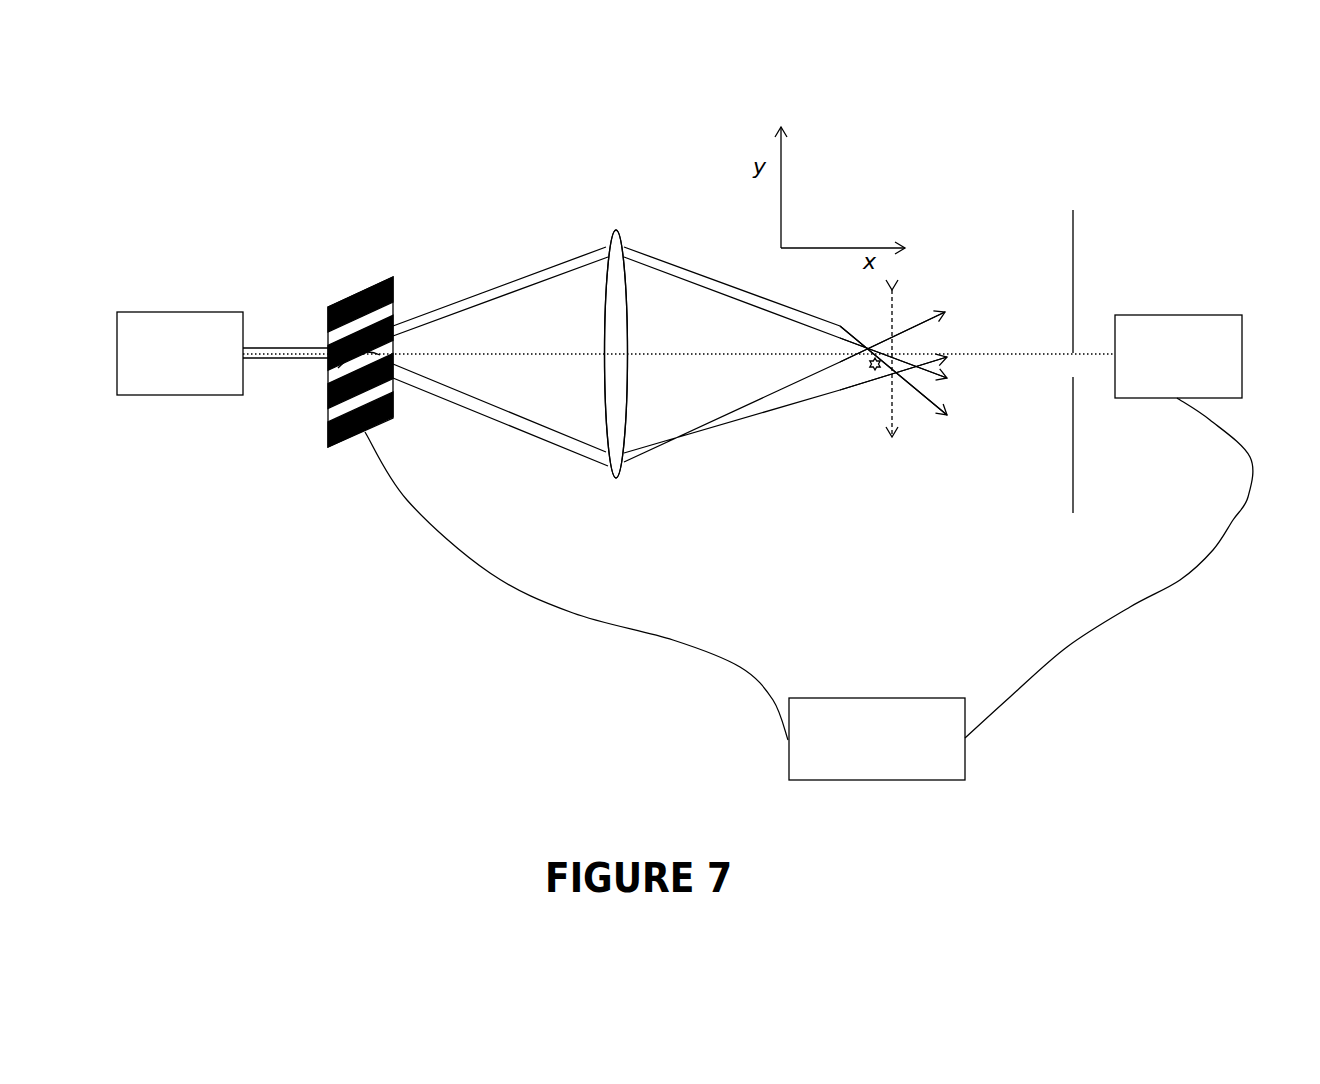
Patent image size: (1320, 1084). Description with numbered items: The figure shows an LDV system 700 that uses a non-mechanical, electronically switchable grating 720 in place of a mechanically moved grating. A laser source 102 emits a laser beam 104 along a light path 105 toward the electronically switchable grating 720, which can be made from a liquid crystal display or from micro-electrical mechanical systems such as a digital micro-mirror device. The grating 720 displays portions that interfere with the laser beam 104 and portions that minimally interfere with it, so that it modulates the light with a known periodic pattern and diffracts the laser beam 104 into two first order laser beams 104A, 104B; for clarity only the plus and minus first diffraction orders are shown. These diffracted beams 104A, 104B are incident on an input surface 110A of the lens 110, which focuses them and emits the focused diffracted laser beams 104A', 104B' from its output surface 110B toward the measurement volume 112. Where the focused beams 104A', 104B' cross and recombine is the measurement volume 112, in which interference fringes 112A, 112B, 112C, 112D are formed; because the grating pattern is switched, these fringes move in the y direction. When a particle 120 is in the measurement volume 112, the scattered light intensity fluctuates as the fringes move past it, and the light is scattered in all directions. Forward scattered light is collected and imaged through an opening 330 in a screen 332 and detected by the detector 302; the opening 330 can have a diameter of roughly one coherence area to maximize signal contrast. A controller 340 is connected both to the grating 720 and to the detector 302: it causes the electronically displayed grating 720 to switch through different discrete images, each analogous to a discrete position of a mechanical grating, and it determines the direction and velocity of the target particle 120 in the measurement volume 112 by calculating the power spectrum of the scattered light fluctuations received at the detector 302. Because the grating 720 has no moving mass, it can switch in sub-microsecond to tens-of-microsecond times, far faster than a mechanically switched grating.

The LDV system 700 is at (381, 158).
The laser source 102 is at (205, 312).
The laser beam 104 is at (298, 352).
The electronically switchable grating 720 is at (357, 290).
The first order diffracted laser beam 104A is at (500, 281).
The first order diffracted laser beam 104B is at (500, 421).
The light path 105 is at (485, 354).
The lens 110 is at (617, 478).
The input surface 110A is at (607, 370).
The output surface 110B is at (628, 373).
The focused diffracted laser beam 104A' is at (732, 282).
The focused diffracted laser beam 104B' is at (732, 423).
The measurement volume 112 is at (860, 345).
The fringe 112A is at (858, 362).
The fringe 112B is at (899, 356).
The fringe 112C is at (899, 364).
The fringe 112D is at (850, 370).
The particle 120 is at (875, 358).
The screen 332 is at (1072, 245).
The opening 330 is at (1078, 368).
The detector 302 is at (1198, 315).
The controller 340 is at (967, 760).